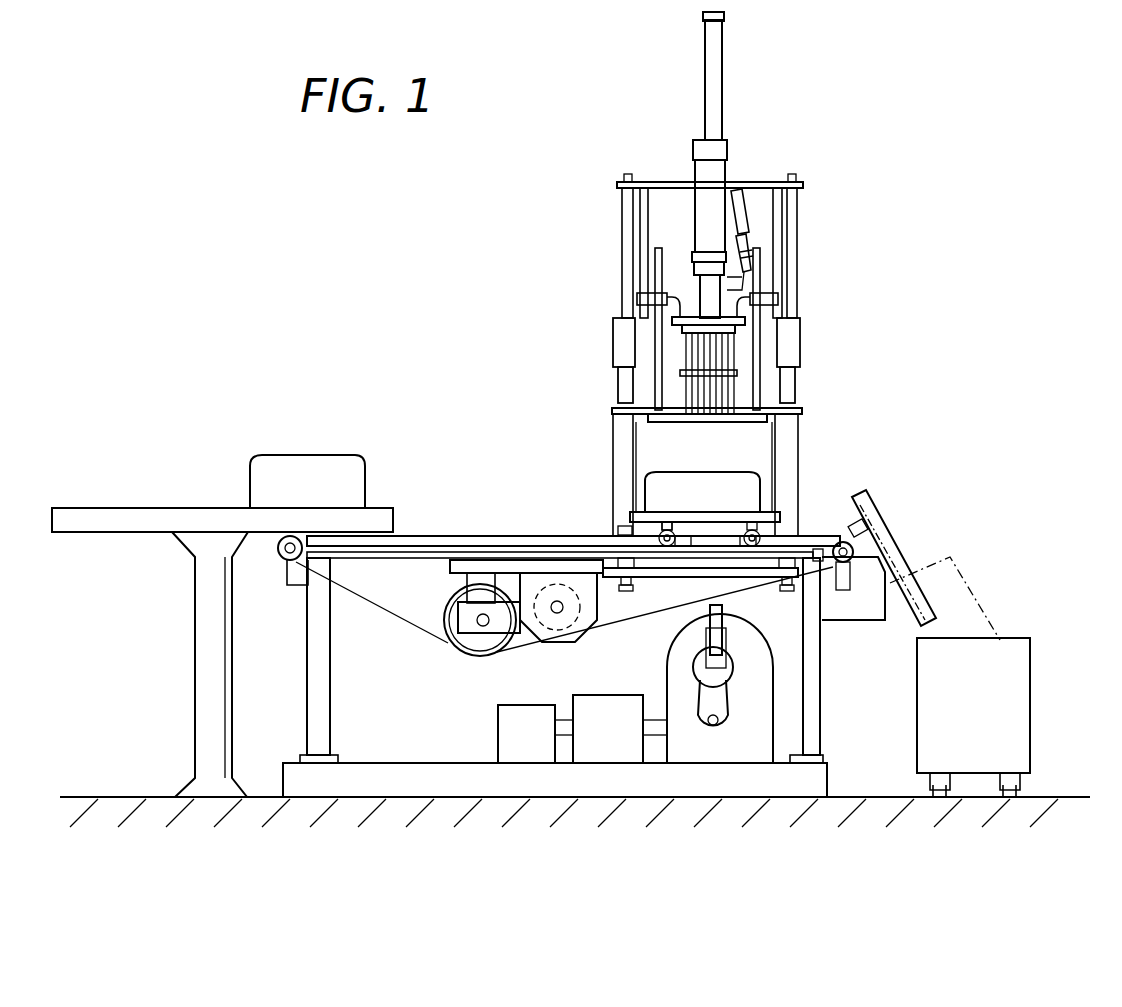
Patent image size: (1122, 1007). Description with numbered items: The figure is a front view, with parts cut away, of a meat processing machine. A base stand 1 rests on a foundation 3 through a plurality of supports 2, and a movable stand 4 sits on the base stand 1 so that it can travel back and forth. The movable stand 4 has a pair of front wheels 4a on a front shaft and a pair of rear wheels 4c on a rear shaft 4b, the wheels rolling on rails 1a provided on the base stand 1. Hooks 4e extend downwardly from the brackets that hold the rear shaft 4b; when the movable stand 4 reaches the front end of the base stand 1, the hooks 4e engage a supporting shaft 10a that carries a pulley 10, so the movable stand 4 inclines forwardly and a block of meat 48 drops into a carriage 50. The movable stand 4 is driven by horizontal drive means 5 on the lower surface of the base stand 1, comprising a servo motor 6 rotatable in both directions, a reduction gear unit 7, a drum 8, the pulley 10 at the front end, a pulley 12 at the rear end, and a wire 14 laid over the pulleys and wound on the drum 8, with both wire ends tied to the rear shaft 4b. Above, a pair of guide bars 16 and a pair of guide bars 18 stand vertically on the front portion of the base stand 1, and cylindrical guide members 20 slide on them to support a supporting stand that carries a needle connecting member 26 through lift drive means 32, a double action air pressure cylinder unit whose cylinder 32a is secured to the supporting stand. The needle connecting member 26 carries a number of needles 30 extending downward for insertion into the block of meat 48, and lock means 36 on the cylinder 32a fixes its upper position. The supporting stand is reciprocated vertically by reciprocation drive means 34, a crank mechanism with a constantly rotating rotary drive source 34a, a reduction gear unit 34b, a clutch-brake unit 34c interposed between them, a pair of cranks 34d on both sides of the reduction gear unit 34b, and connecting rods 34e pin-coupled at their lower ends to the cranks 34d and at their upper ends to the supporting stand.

The base stand 1 is at (413, 548).
The rails 1a is at (497, 535).
The supports 2 is at (330, 706).
The foundation 3 is at (605, 785).
The movable stand 4 is at (712, 512).
The front wheels 4a is at (747, 563).
The rear shaft 4b is at (648, 507).
The rear wheels 4c is at (625, 533).
The hooks 4e is at (670, 553).
The horizontal drive means 5 is at (457, 655).
The servo motor 6 is at (570, 643).
The reduction gear unit 7 is at (455, 607).
The drum 8 is at (487, 645).
The pulley 10 is at (842, 538).
The supporting shaft 10a is at (845, 555).
The pulley 12 is at (285, 560).
The wire 14 is at (373, 610).
The guide bars 16 is at (613, 557).
The guide bars 18 is at (795, 380).
The cylindrical guide members 20 is at (800, 343).
The needle connecting member 26 is at (740, 322).
The needles 30 is at (735, 392).
The lift drive means 32 is at (738, 130).
The cylinder 32a is at (697, 170).
The reciprocation drive means 34 is at (773, 673).
The rotary drive source 34a is at (530, 750).
The reduction gear unit 34b is at (750, 700).
The clutch-brake unit 34c is at (600, 745).
The cranks 34d is at (712, 740).
The connecting rods 34e is at (707, 632).
The lock means 36 is at (745, 215).
The block of meat 48 is at (345, 455).
The carriage 50 is at (1010, 640).